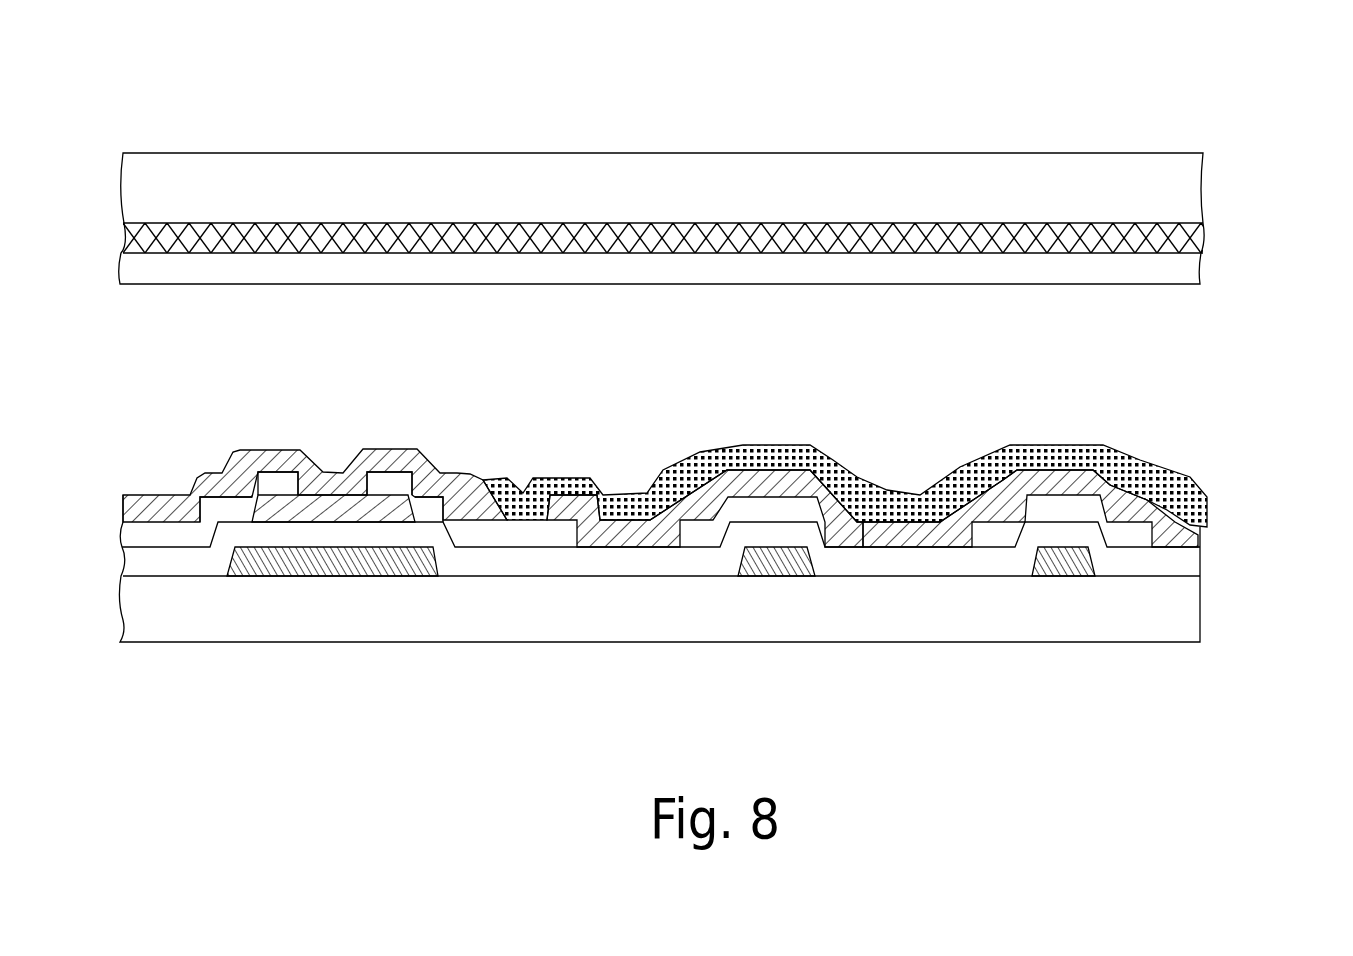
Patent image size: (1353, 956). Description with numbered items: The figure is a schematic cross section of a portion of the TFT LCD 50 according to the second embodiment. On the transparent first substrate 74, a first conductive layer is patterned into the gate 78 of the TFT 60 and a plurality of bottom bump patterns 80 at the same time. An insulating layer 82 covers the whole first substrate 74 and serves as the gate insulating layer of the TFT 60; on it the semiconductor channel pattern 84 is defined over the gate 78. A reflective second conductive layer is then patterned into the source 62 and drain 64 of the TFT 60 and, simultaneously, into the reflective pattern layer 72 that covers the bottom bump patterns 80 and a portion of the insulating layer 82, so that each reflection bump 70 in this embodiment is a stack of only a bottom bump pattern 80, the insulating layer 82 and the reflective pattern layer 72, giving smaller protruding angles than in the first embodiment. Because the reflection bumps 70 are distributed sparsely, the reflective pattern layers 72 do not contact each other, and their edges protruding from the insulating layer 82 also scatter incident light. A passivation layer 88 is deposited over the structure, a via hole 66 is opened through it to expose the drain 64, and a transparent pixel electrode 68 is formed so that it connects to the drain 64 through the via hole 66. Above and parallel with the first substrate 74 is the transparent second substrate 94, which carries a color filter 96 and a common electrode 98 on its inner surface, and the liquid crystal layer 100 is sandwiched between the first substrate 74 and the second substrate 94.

The TFT LCD 50 is at (1090, 126).
The TFT 60 is at (344, 430).
The source 62 is at (270, 485).
The drain 64 is at (455, 512).
The via hole 66 is at (558, 475).
The pixel electrode 68 is at (650, 477).
The reflection bump 70 is at (792, 428).
The reflective pattern layer 72 is at (820, 510).
The first substrate 74 is at (1175, 631).
The gate 78 is at (333, 557).
The bottom bump pattern 80 is at (775, 557).
The insulating layer 82 is at (130, 563).
The channel pattern 84 is at (415, 452).
The passivation layer 88 is at (123, 508).
The second substrate 94 is at (1175, 209).
The color filter 96 is at (1203, 233).
The common electrode 98 is at (1200, 275).
The liquid crystal layer 100 is at (1242, 295).